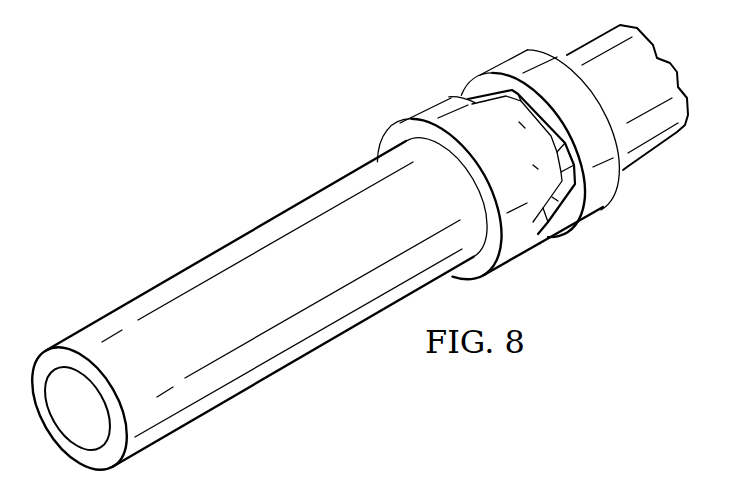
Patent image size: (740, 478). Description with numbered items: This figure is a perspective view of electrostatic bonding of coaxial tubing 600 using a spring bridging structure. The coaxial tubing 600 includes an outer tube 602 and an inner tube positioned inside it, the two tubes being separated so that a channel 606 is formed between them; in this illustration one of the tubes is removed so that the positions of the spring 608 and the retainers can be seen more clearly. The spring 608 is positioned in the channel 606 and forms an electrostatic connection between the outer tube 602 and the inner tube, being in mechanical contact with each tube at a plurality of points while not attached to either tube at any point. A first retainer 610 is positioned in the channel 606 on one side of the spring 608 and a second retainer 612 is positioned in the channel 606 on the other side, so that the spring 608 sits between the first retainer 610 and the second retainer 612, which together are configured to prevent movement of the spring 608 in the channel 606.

The coaxial tubing 600 is at (228, 110).
The outer tube 602 is at (240, 245).
The channel 606 is at (550, 197).
The spring 608 is at (480, 88).
The first retainer 610 is at (503, 67).
The second retainer 612 is at (413, 117).